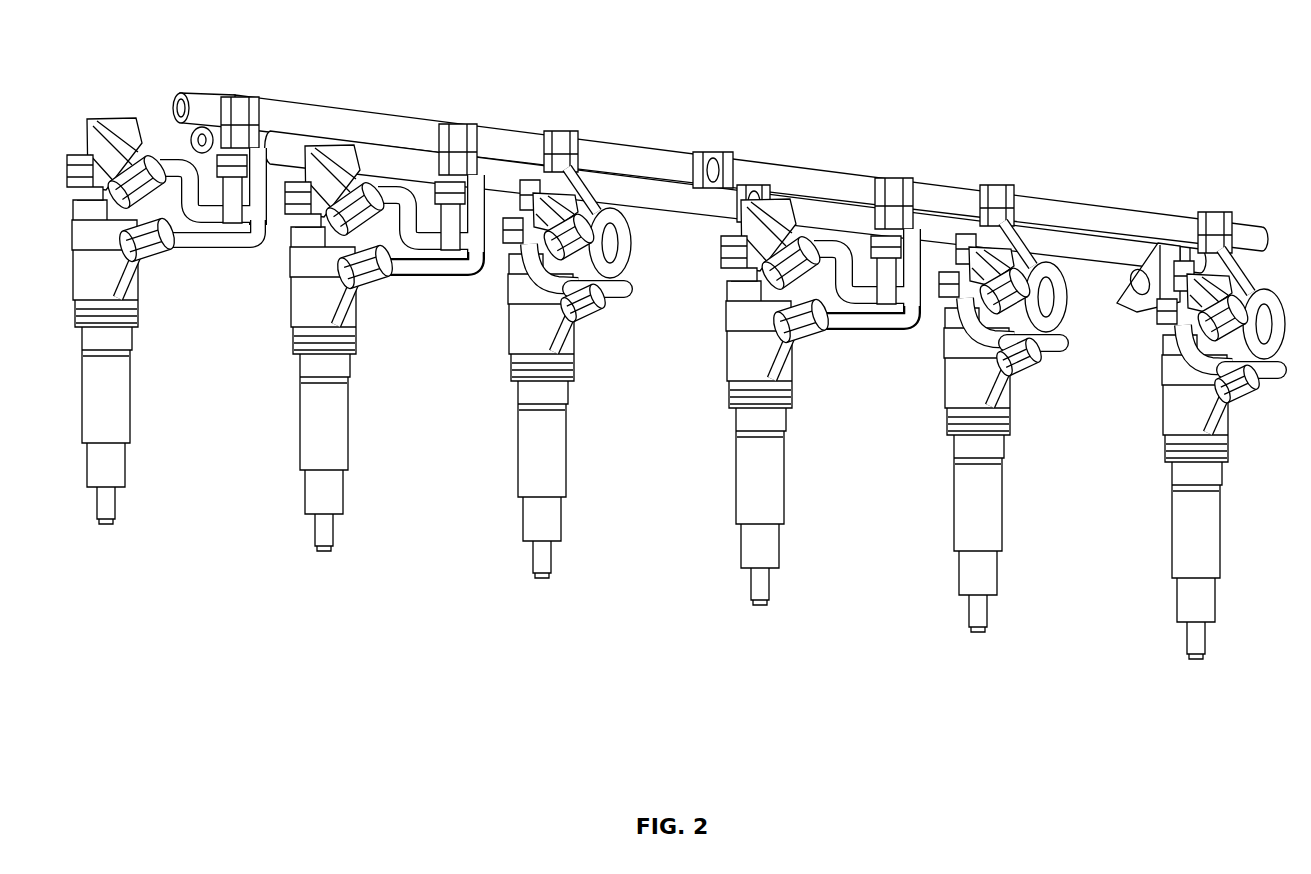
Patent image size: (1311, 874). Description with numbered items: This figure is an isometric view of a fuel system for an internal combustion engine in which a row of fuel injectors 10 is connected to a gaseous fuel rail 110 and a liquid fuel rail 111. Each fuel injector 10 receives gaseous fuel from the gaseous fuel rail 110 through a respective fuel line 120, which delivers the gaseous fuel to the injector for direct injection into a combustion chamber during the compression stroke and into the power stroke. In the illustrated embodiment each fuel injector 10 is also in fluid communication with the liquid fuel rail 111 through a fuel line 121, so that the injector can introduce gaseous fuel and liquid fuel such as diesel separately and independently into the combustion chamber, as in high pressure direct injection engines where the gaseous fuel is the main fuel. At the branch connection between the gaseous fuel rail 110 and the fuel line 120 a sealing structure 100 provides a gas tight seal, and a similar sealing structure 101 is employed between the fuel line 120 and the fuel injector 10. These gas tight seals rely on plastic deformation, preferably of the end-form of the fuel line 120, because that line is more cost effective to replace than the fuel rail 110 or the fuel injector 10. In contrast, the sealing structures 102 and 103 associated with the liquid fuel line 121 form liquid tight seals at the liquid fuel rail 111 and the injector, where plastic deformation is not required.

The fuel injector 10 is at (128, 380).
The sealing structure 100 is at (210, 162).
The sealing structure 101 is at (157, 262).
The sealing structure 102 is at (254, 116).
The sealing structure 103 is at (149, 150).
The gaseous fuel rail 110 is at (397, 160).
The liquid fuel rail 111 is at (358, 112).
The fuel line 120 is at (200, 249).
The fuel line 121 is at (272, 244).